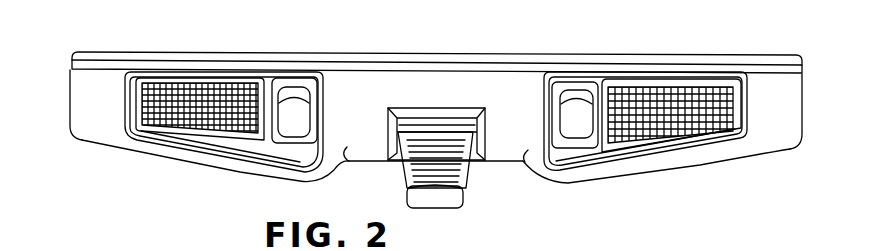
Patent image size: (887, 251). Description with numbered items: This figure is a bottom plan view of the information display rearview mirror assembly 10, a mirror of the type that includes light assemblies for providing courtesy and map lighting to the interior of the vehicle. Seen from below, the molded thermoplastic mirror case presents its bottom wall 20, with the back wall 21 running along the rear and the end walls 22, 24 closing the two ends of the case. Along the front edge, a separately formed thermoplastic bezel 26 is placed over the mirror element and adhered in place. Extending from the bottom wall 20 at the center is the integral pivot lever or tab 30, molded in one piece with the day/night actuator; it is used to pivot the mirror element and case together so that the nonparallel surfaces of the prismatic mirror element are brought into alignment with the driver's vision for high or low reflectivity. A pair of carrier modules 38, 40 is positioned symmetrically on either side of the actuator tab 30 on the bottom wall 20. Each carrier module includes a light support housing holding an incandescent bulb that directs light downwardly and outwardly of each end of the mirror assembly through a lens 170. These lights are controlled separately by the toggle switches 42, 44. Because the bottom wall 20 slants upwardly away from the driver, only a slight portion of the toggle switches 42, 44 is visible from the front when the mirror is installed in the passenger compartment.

The rearview mirror assembly 10 is at (435, 129).
The bottom wall 20 is at (458, 97).
The back wall 21 is at (350, 163).
The end wall 22 is at (72, 110).
The end wall 24 is at (803, 116).
The bezel 26 is at (730, 54).
The pivot lever or tab 30 is at (463, 198).
The carrier module 38 is at (607, 150).
The carrier module 40 is at (211, 151).
The toggle switch 42 is at (572, 105).
The toggle switch 44 is at (293, 110).
The lens 170 is at (200, 97).